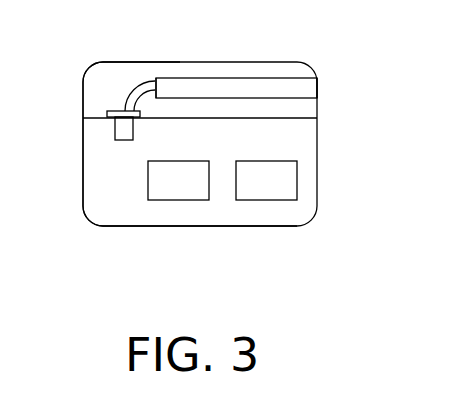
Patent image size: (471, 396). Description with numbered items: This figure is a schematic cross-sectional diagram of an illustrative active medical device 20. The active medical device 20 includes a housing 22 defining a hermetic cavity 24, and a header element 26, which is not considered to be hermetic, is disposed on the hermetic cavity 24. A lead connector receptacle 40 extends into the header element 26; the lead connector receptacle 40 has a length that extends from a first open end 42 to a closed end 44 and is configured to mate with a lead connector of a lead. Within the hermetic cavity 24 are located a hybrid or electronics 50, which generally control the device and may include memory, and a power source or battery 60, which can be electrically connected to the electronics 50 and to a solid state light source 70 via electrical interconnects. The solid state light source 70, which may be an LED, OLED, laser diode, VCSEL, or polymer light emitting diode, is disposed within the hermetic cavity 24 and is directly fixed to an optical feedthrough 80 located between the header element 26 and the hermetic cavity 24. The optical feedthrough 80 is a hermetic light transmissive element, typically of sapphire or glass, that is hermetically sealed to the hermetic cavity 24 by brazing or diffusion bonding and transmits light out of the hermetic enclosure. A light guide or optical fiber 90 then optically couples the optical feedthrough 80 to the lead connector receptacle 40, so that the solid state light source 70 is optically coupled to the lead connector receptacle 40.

The active medical device 20 is at (233, 258).
The housing 22 is at (172, 227).
The hermetic cavity 24 is at (119, 193).
The header element 26 is at (83, 85).
The lead connector receptacle 40 is at (269, 57).
The first open end 42 is at (318, 90).
The closed end 44 is at (157, 89).
The electronics 50 is at (190, 190).
The power source 60 is at (278, 190).
The solid state light source 70 is at (114, 133).
The optical feedthrough 80 is at (107, 113).
The optical fiber 90 is at (126, 94).